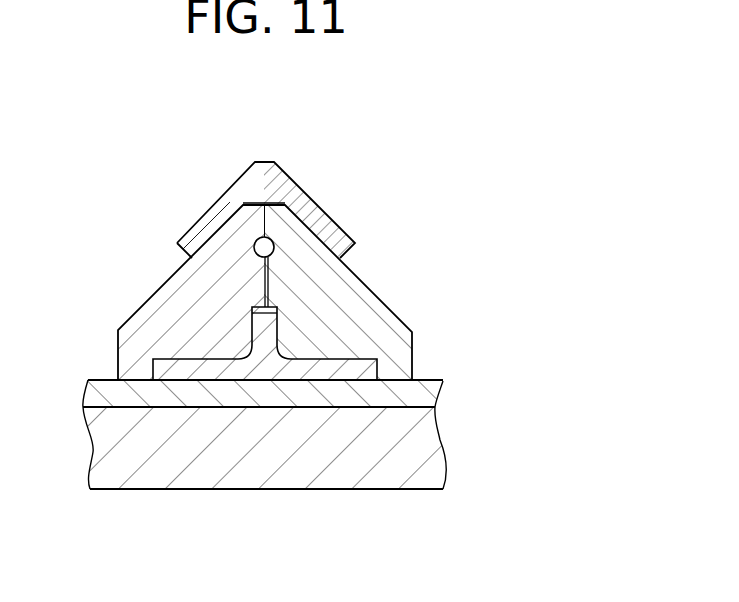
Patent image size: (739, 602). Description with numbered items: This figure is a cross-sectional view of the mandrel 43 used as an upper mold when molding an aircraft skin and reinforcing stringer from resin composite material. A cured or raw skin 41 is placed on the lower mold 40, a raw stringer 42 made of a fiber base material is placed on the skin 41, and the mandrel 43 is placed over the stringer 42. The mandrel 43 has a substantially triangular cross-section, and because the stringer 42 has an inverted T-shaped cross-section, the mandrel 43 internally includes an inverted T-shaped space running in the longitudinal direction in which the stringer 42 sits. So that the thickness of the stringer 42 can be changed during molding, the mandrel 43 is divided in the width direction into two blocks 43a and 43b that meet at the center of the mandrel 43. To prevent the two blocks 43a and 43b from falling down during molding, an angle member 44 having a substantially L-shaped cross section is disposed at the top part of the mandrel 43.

The lower mold 40 is at (292, 472).
The skin 41 is at (429, 397).
The stringer 42 is at (260, 362).
The mandrel 43 is at (274, 263).
The block 43a is at (152, 312).
The block 43b is at (353, 297).
The angle member 44 is at (292, 188).